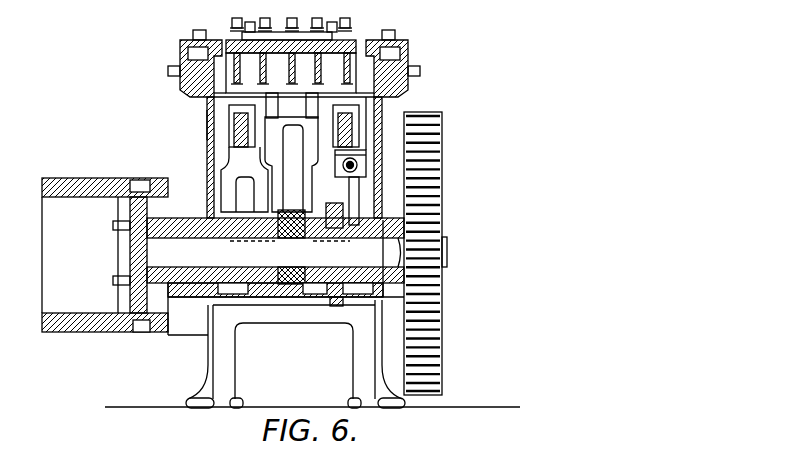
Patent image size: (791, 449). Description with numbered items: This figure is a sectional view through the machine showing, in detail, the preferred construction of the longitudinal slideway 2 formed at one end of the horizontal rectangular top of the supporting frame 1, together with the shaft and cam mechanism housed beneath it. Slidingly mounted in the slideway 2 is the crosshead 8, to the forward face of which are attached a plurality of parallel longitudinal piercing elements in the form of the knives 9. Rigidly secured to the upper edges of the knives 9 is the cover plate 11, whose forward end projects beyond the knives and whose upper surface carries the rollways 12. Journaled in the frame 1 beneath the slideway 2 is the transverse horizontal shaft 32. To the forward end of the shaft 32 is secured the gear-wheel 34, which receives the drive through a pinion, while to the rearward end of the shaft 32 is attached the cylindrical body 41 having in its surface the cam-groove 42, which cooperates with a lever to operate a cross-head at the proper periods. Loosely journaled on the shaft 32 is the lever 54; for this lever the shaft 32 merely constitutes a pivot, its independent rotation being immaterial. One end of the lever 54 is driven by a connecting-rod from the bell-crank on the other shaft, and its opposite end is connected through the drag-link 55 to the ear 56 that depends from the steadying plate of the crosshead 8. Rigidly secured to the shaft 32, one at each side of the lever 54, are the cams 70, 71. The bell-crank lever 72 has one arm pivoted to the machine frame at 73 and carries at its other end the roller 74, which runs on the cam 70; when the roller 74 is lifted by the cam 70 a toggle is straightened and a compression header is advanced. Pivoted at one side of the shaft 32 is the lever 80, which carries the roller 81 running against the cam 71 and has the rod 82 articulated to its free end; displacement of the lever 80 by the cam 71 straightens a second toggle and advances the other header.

The supporting frame 1 is at (231, 146).
The longitudinal slideway 2 is at (194, 44).
The crosshead 8 is at (359, 66).
The knife 9 is at (275, 32).
The cover plate 11 is at (303, 45).
The rollway 12 is at (240, 22).
The shaft 32 is at (275, 250).
The gear-wheel 34 is at (438, 321).
The cylindrical body 41 is at (73, 183).
The cam-groove 42 is at (143, 179).
The lever 54 is at (297, 287).
The drag-link 55 is at (288, 168).
The ear 56 is at (384, 104).
The cam 70 is at (248, 288).
The cam 71 is at (337, 300).
The bell-crank lever 72 is at (238, 146).
The pivot 73 is at (216, 123).
The roller 74 is at (243, 189).
The lever 80 is at (356, 189).
The roller 81 is at (333, 203).
The rod 82 is at (358, 163).